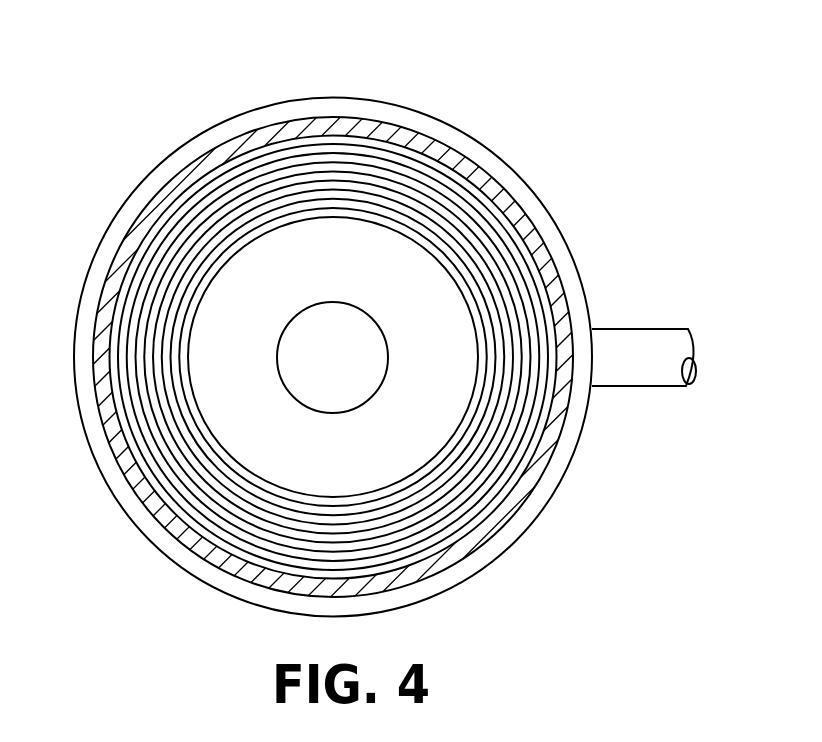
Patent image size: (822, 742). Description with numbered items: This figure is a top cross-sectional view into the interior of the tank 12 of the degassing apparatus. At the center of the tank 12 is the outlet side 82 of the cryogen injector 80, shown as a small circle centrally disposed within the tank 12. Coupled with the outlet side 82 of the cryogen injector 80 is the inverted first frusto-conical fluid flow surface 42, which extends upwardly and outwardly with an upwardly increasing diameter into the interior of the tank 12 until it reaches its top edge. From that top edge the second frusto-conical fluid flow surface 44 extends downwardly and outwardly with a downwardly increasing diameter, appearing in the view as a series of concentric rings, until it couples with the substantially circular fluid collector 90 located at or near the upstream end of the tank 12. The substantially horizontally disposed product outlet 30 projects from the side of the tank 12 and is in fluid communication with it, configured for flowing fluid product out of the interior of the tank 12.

The tank 12 is at (92, 253).
The fluid collector 90 is at (268, 138).
The second frusto-conical fluid flow surface 44 is at (235, 515).
The first frusto-conical fluid flow surface 42 is at (390, 447).
The outlet side 82 is at (386, 365).
The cryogen injector 80 is at (325, 357).
The product outlet 30 is at (637, 347).